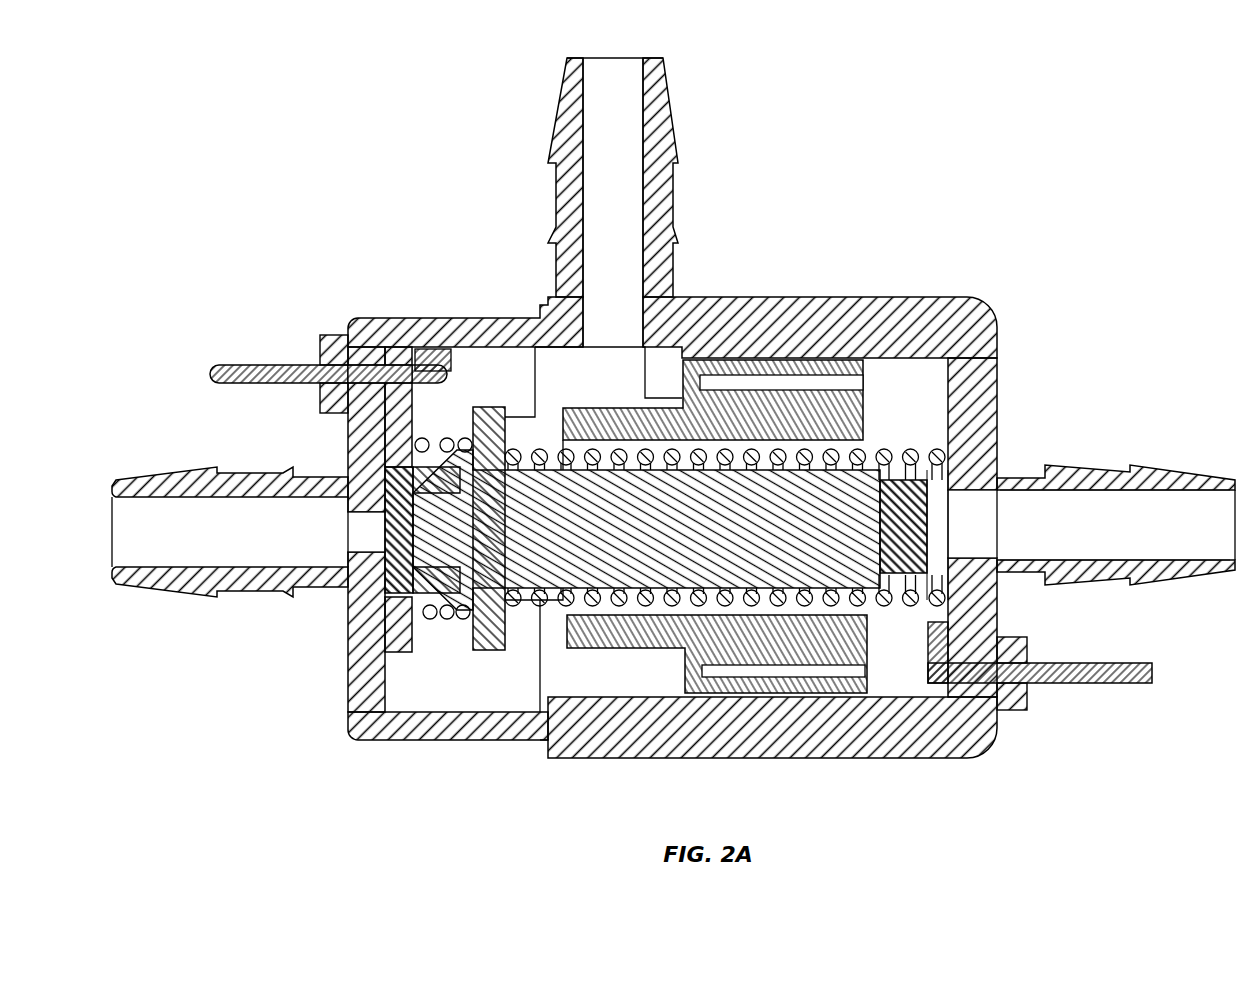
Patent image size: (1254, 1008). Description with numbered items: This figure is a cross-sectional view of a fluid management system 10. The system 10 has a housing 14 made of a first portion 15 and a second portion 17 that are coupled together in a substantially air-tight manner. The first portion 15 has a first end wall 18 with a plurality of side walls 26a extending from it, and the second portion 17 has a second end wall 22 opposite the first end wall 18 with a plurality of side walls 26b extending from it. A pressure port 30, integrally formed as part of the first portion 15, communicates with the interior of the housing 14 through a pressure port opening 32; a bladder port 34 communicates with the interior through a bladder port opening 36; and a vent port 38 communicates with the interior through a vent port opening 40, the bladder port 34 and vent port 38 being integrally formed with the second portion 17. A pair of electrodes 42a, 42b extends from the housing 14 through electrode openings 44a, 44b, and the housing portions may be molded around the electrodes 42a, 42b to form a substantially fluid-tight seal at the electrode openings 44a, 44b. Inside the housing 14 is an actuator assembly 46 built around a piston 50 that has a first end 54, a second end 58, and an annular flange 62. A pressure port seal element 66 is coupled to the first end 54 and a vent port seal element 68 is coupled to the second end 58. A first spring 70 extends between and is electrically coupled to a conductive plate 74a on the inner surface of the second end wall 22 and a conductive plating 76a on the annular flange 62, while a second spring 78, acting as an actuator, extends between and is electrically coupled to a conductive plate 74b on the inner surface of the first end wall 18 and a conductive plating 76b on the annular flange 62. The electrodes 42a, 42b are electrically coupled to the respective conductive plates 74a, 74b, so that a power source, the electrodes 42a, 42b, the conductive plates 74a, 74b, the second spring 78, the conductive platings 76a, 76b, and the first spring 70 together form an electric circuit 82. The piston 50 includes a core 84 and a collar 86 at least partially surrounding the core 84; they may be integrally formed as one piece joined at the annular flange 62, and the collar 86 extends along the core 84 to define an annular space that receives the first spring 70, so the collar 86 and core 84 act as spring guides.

The fluid management system 10 is at (915, 140).
The housing 14 is at (285, 703).
The first portion 15 is at (515, 283).
The second portion 17 is at (985, 285).
The first end wall 18 is at (375, 725).
The second end wall 22 is at (995, 373).
The side walls 26a is at (403, 330).
The side walls 26b is at (935, 320).
The pressure port 30 is at (165, 468).
The pressure port opening 32 is at (370, 520).
The bladder port 34 is at (665, 130).
The bladder port opening 36 is at (605, 345).
The vent port 38 is at (1160, 465).
The vent port opening 40 is at (1105, 465).
The electrode 42a is at (235, 363).
The electrode 42b is at (1135, 683).
The electrode opening 44a is at (322, 345).
The electrode opening 44b is at (1025, 695).
The actuator assembly 46 is at (680, 388).
The piston 50 is at (715, 520).
The first end 54 is at (385, 615).
The second end 58 is at (932, 520).
The annular flange 62 is at (485, 410).
The pressure port seal element 66 is at (370, 532).
The vent port seal element 68 is at (990, 528).
The first spring 70 is at (815, 440).
The conductive plate 74a is at (985, 583).
The conductive plate 74b is at (355, 445).
The conductive plating 76a is at (520, 450).
The conductive plating 76b is at (440, 618).
The second spring 78 is at (360, 380).
The electric circuit 82 is at (845, 395).
The core 84 is at (600, 548).
The collar 86 is at (838, 677).